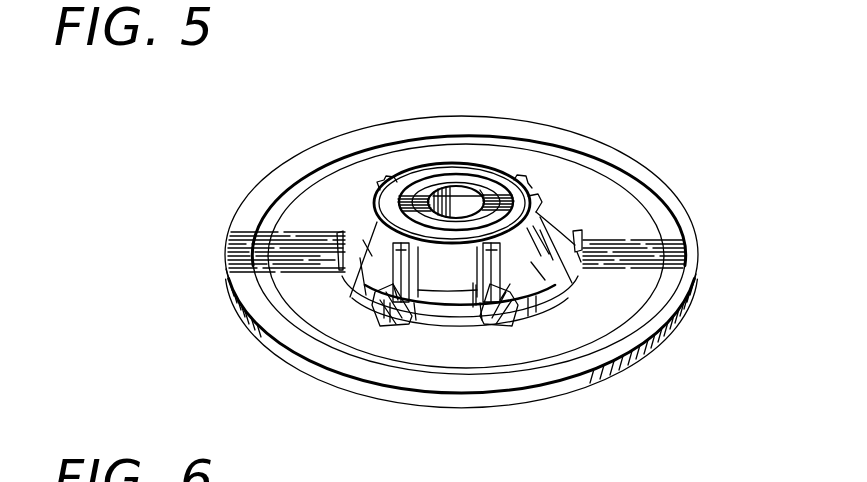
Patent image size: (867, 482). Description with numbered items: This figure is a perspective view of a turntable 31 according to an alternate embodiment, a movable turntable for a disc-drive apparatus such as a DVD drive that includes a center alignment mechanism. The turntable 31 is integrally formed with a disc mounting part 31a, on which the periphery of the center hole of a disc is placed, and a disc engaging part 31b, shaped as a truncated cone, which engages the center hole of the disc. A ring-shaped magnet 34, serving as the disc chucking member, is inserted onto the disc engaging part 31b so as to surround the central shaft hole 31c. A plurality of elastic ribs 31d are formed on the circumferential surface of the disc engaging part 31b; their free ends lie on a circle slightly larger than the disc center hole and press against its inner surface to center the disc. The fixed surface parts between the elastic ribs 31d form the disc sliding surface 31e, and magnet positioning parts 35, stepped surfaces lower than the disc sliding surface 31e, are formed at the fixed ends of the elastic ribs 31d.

The turntable 31 is at (622, 118).
The disc mounting part 31a is at (672, 280).
The disc engaging part 31b is at (417, 170).
The central shaft hole 31c is at (452, 212).
The elastic ribs 31d is at (397, 323).
The disc sliding surface 31e is at (643, 348).
The ring-shaped magnet 34 is at (498, 190).
The magnet positioning parts 35 is at (373, 312).